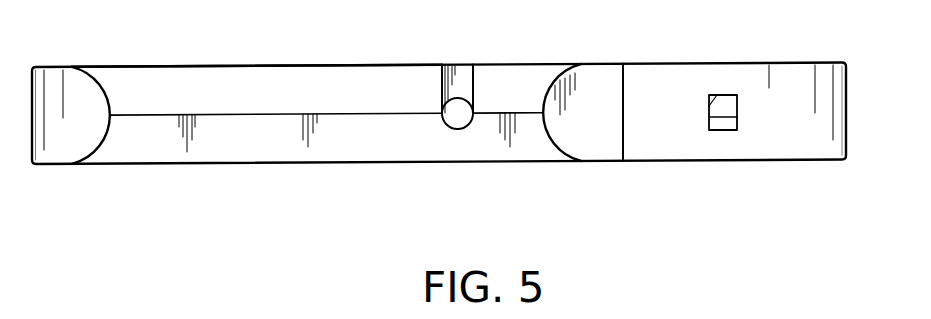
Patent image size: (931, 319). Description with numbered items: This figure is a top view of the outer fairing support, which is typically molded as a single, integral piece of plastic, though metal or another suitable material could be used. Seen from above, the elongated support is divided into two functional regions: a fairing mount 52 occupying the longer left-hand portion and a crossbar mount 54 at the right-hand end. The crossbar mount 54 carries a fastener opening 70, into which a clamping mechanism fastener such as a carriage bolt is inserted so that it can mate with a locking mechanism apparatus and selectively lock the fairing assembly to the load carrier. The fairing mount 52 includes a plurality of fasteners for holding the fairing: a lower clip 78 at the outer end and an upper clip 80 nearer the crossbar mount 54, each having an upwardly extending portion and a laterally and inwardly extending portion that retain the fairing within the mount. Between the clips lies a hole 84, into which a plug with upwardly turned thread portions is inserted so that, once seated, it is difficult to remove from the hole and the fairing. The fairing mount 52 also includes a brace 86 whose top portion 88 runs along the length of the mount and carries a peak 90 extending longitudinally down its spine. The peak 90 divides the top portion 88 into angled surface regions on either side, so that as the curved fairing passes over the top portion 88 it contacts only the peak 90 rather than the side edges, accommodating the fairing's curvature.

The fairing mount 52 is at (249, 164).
The crossbar mount 54 is at (714, 172).
The fastener opening 70 is at (715, 97).
The lower clip 78 is at (52, 82).
The upper clip 80 is at (588, 97).
The hole 84 is at (441, 120).
The brace 86 is at (197, 67).
The top portion 88 is at (335, 83).
The peak 90 is at (363, 116).